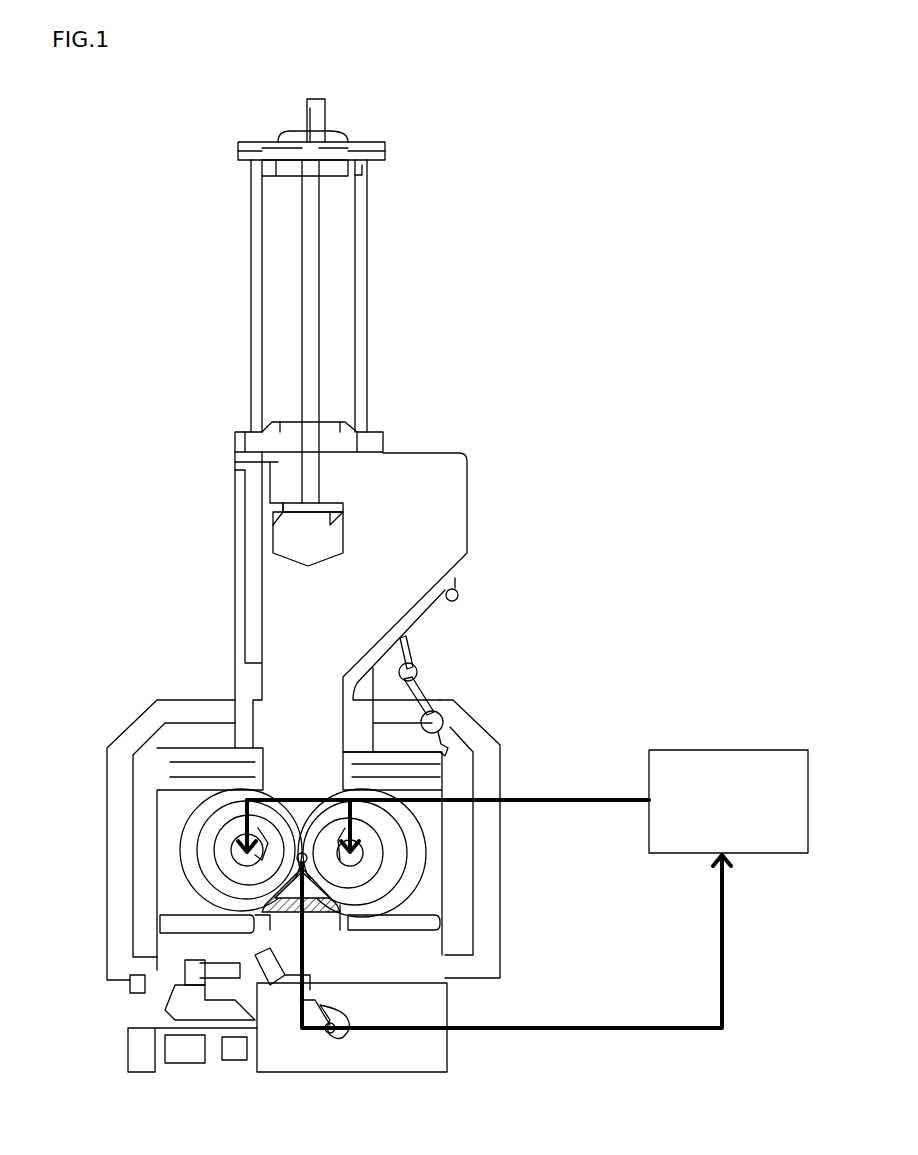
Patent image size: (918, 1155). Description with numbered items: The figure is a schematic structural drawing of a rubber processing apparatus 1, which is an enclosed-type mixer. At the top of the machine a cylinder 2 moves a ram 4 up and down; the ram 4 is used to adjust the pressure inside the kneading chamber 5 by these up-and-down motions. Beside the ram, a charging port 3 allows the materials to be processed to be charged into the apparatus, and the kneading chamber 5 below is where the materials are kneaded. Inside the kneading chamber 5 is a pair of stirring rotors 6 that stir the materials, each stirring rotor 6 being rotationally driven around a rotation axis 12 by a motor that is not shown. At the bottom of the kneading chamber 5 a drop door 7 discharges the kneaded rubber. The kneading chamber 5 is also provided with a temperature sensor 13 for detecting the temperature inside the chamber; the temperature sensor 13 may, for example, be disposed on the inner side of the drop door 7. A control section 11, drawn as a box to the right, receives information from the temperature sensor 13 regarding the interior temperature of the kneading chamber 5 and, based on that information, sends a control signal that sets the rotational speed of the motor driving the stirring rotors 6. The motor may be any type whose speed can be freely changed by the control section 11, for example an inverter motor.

The rubber processing apparatus 1 is at (437, 168).
The cylinder 2 is at (347, 237).
The charging port 3 is at (440, 478).
The ram 4 is at (290, 530).
The kneading chamber 5 is at (405, 862).
The stirring rotor 6 is at (381, 859).
The drop door 7 is at (263, 903).
The control section 11 is at (782, 855).
The rotation axis 12 is at (233, 853).
The temperature sensor 13 is at (303, 852).